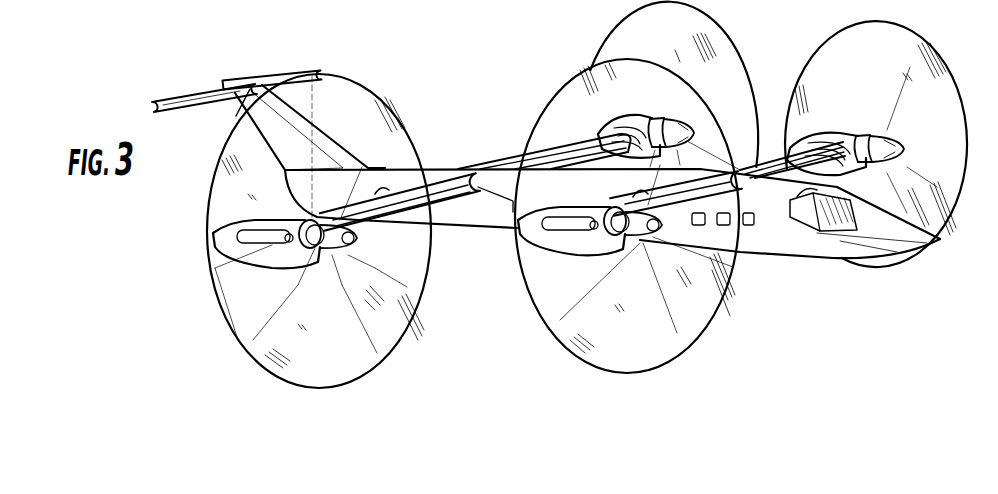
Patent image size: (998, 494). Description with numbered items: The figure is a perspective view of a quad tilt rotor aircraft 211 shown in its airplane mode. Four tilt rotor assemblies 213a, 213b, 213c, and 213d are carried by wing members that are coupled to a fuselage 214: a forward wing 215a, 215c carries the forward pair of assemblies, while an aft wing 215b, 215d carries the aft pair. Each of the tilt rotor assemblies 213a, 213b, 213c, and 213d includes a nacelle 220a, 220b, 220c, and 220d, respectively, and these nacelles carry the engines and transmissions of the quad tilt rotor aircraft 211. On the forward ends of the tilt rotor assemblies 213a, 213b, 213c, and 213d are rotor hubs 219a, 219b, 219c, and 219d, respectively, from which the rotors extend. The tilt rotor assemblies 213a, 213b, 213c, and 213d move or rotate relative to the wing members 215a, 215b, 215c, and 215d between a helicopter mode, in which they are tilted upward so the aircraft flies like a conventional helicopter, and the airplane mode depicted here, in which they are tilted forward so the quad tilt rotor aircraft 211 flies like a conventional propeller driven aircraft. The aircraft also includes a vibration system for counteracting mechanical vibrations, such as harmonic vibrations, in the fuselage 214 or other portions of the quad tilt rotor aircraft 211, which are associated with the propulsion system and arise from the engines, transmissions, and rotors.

The quad tilt rotor aircraft 211 is at (512, 54).
The tilt rotor assembly 213a is at (871, 115).
The tilt rotor assembly 213b is at (643, 109).
The tilt rotor assembly 213c is at (587, 258).
The tilt rotor assembly 213d is at (193, 262).
The fuselage 214 is at (803, 246).
The forward wing 215a is at (770, 166).
The aft wing 215b is at (515, 163).
The forward wing 215c is at (652, 190).
The aft wing 215d is at (437, 183).
The rotor hub 219a is at (897, 143).
The rotor hub 219b is at (690, 125).
The rotor hub 219c is at (638, 230).
The rotor hub 219d is at (332, 250).
The nacelle 220a is at (837, 133).
The nacelle 220b is at (589, 128).
The nacelle 220c is at (572, 238).
The nacelle 220d is at (262, 265).